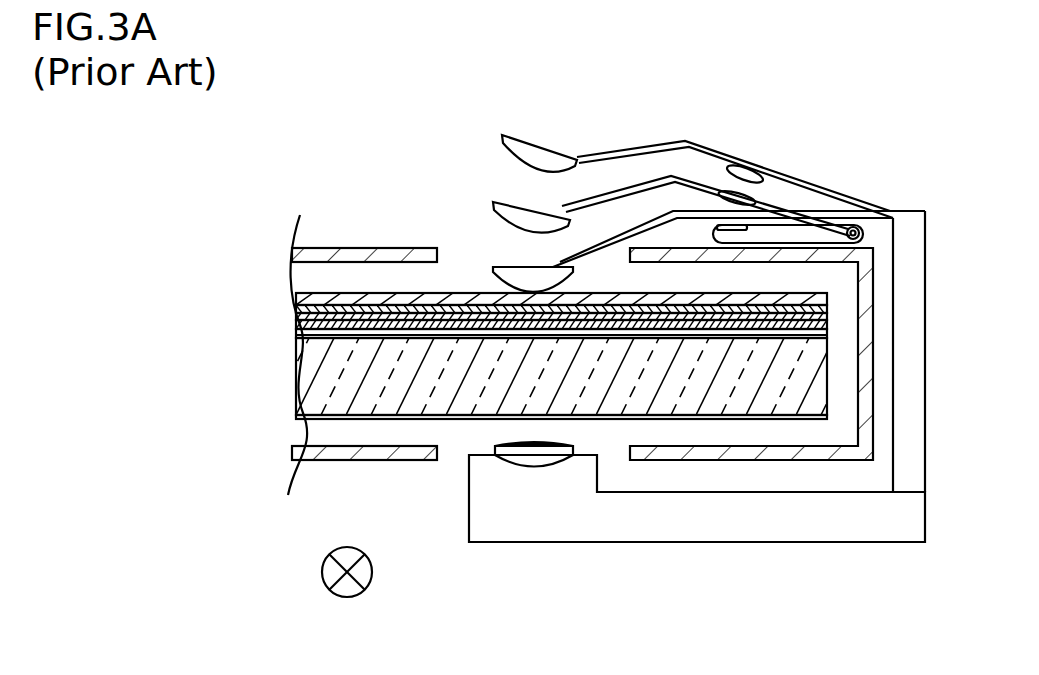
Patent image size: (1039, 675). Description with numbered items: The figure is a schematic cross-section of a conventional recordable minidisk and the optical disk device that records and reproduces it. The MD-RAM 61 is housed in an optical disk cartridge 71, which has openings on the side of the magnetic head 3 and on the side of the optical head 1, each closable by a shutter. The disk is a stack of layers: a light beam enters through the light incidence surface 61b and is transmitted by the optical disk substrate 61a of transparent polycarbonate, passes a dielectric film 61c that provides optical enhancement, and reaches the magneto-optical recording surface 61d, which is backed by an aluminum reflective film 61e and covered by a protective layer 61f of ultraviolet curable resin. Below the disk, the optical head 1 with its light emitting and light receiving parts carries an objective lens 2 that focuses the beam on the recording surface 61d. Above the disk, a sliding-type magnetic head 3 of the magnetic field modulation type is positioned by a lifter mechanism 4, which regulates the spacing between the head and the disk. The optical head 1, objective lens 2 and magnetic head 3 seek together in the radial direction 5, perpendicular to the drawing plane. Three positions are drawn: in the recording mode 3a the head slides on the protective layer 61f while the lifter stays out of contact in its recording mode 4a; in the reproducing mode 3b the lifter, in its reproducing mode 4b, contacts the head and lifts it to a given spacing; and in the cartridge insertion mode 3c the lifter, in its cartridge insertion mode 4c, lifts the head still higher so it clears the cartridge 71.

The optical head 1 is at (587, 527).
The objective lens 2 is at (525, 460).
The magnetic head 3 is at (447, 175).
The recording mode 3a is at (518, 270).
The reproducing mode 3b is at (493, 203).
The cartridge insertion mode 3c is at (493, 140).
The lifter mechanism 4 is at (735, 133).
The recording mode 4a is at (713, 230).
The reproducing mode 4b is at (717, 198).
The cartridge insertion mode 4c is at (735, 133).
The radial direction 5 is at (345, 597).
The MD-RAM 61 is at (460, 340).
The optical disk substrate 61a is at (313, 375).
The light incidence surface 61b is at (494, 443).
The dielectric film 61c is at (300, 316).
The magneto-optical recording surface 61d is at (305, 325).
The reflective film 61e is at (313, 308).
The protective layer 61f is at (345, 296).
The optical disk cartridge 71 is at (340, 255).